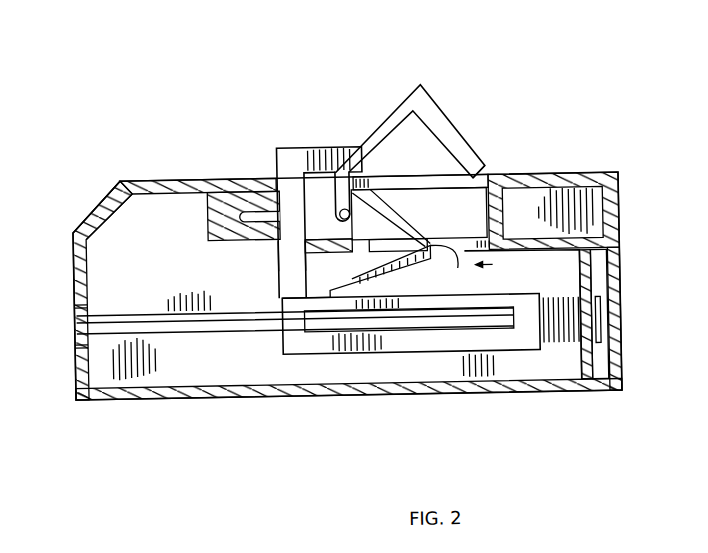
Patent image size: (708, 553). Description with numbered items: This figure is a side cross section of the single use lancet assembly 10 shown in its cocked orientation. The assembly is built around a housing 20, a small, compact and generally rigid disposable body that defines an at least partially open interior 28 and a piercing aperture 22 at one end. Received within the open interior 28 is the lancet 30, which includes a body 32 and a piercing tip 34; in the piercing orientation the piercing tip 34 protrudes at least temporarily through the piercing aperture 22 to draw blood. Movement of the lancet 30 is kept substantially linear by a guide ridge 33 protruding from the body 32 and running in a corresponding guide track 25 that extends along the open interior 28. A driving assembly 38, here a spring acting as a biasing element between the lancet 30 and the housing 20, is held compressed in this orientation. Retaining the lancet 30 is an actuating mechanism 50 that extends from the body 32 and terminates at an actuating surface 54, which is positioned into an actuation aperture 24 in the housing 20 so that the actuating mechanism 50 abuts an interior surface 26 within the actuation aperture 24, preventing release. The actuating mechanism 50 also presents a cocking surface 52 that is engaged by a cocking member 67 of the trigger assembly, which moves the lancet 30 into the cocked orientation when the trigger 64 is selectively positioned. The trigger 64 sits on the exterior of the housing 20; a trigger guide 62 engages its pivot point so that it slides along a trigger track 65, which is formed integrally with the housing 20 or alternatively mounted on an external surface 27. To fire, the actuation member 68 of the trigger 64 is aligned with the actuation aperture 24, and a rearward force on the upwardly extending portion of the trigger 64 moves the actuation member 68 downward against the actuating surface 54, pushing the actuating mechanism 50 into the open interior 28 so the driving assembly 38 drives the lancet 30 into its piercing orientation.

The single use lancet assembly 10 is at (556, 104).
The housing 20 is at (570, 409).
The piercing aperture 22 is at (80, 330).
The actuation aperture 24 is at (434, 192).
The guide track 25 is at (117, 336).
The interior surface 26 is at (458, 270).
The external surface 27 is at (202, 175).
The open interior 28 is at (118, 226).
The lancet 30 is at (509, 292).
The body 32 is at (298, 356).
The guide ridge 33 is at (402, 341).
The piercing tip 34 is at (239, 333).
The driving assembly 38 is at (547, 352).
The actuating mechanism 50 is at (501, 253).
The cocking surface 52 is at (290, 293).
The actuating surface 54 is at (431, 231).
The trigger guide 62 is at (347, 207).
The trigger 64 is at (414, 81).
The trigger track 65 is at (241, 214).
The cocking member 67 is at (301, 251).
The actuation member 68 is at (480, 162).